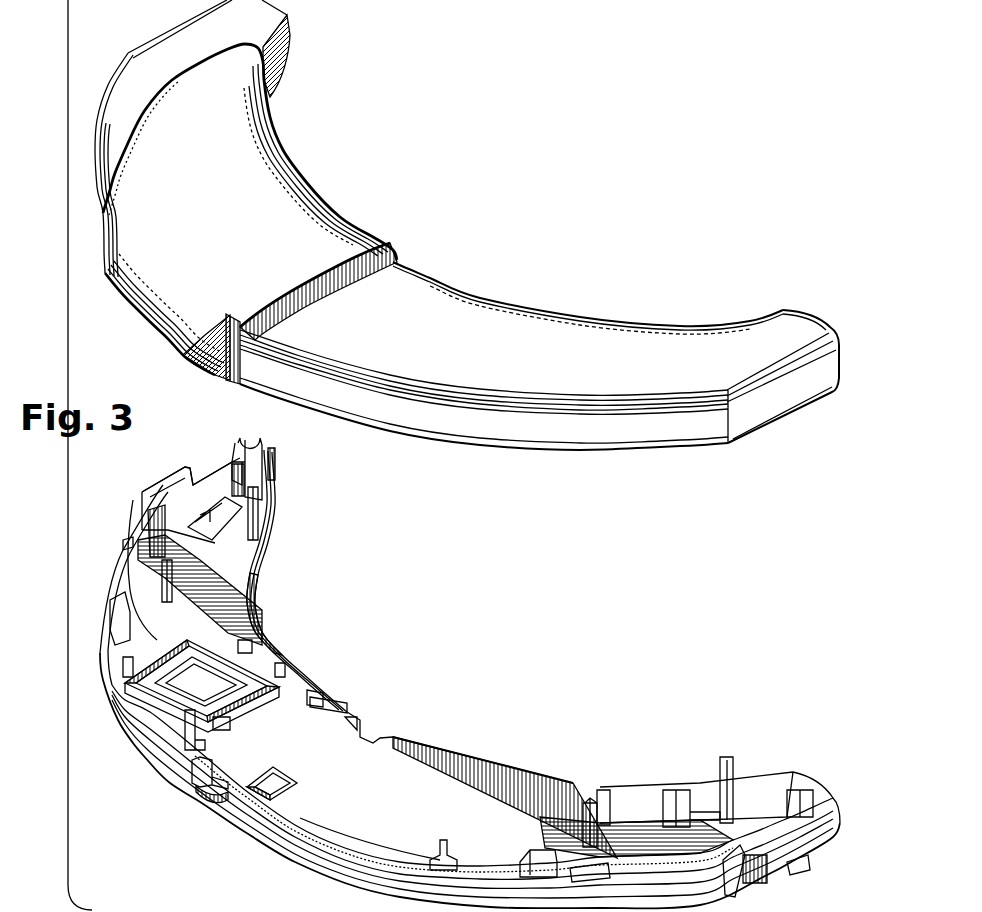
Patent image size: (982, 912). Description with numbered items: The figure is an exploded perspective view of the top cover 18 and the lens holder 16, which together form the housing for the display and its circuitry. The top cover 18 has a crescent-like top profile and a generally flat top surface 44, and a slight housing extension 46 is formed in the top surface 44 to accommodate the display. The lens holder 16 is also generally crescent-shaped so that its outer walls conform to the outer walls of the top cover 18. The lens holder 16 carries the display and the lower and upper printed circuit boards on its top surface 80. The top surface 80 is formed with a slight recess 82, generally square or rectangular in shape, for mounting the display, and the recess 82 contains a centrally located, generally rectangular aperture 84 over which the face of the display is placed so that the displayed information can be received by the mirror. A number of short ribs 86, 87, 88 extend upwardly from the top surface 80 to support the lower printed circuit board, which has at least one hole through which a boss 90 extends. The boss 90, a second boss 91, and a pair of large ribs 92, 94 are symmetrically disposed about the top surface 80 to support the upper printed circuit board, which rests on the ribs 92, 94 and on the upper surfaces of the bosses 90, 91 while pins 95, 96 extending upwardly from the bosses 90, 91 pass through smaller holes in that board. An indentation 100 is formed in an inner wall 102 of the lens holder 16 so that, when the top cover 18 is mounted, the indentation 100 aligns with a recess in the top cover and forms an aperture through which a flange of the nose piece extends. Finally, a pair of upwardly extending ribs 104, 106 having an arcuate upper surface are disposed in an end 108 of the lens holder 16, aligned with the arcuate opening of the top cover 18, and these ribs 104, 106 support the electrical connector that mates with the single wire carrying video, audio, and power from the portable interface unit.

The lens holder 16 is at (460, 649).
The top cover 18 is at (467, 225).
The top surface 44 is at (477, 330).
The housing extension 46 is at (253, 190).
The top surface 80 is at (414, 795).
The recess 82 is at (153, 697).
The aperture 84 is at (190, 692).
The rib 86 is at (195, 690).
The rib 87 is at (207, 813).
The rib 88 is at (320, 693).
The boss 90 is at (604, 823).
The second boss 91 is at (162, 568).
The large rib 92 is at (733, 768).
The large rib 94 is at (255, 500).
The pin 95 is at (590, 803).
The pin 96 is at (162, 535).
The indentation 100 is at (371, 732).
The inner wall 102 is at (483, 763).
The rib 104 is at (235, 443).
The rib 106 is at (248, 435).
The end 108 is at (280, 478).